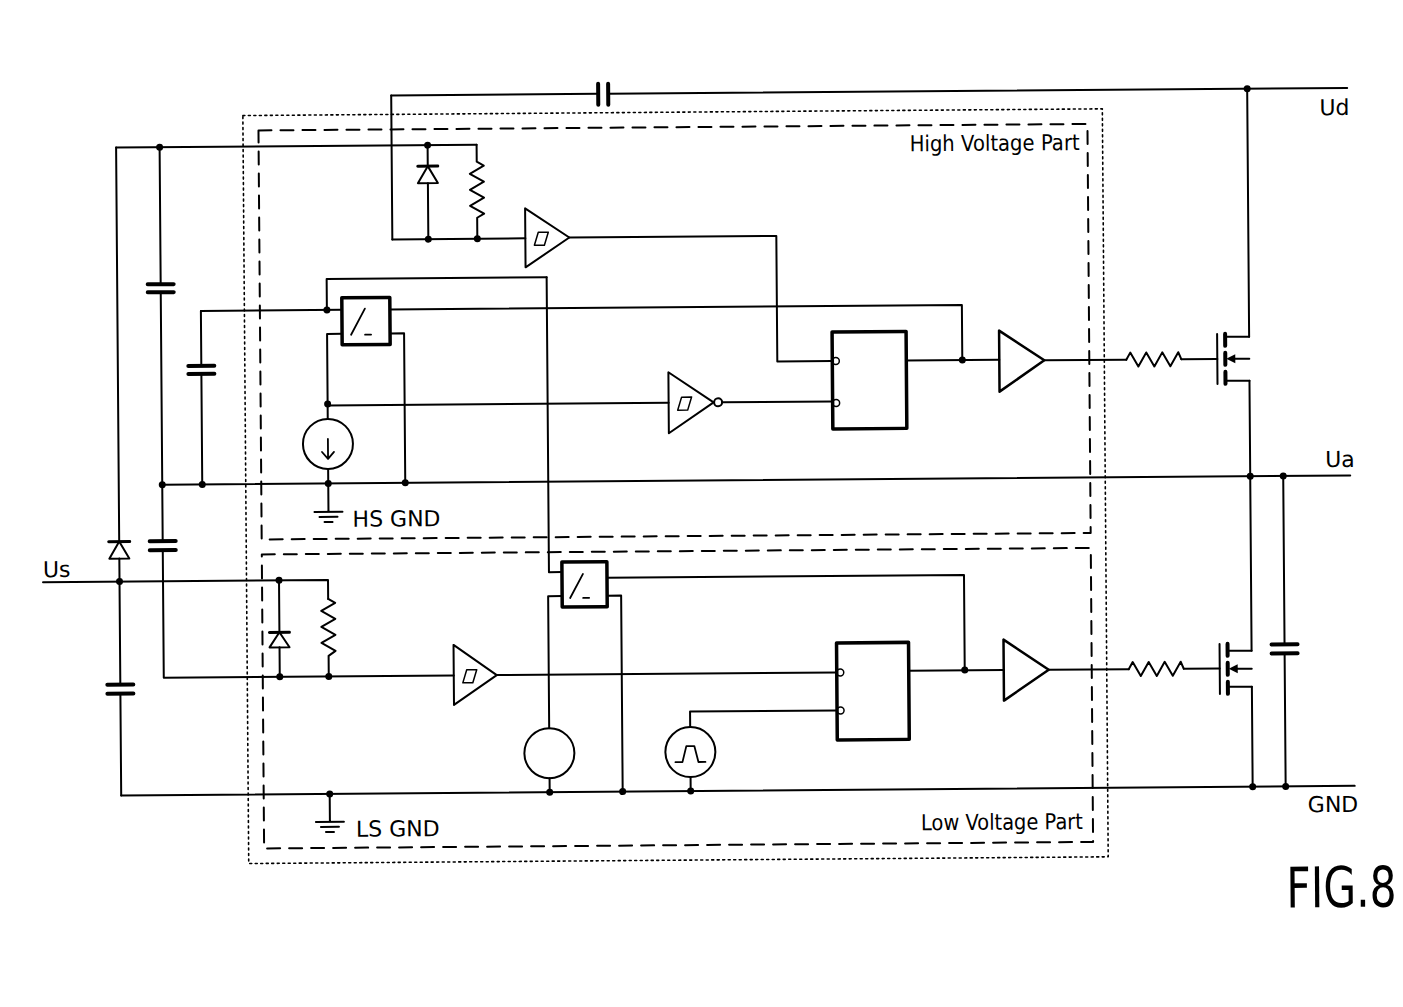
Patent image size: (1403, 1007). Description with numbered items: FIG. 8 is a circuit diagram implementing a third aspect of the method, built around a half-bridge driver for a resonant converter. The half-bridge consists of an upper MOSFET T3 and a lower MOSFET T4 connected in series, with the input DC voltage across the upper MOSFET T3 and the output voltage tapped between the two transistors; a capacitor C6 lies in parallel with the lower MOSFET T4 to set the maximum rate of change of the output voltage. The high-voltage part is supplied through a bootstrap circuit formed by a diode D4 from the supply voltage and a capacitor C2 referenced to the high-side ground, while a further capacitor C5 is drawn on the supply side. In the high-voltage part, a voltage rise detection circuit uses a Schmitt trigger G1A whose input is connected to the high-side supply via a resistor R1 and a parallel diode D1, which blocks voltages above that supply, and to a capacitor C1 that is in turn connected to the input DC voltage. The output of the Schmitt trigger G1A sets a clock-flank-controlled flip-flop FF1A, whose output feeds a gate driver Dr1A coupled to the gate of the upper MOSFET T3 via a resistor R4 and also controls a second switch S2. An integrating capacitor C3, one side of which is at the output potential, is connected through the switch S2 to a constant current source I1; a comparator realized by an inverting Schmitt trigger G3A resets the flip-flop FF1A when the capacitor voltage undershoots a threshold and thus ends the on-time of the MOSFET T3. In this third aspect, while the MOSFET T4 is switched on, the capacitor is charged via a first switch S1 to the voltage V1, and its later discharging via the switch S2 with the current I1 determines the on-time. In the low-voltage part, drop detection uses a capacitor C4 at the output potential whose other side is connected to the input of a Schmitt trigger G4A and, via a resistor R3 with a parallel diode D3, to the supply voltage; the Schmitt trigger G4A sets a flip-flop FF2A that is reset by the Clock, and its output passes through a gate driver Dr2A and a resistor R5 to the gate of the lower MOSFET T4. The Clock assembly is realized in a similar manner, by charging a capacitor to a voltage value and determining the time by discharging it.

The capacitor C1 is at (621, 80).
The capacitor C2 is at (173, 273).
The capacitor C3 is at (213, 354).
The capacitor C4 is at (174, 531).
The capacitor C5 is at (132, 673).
The capacitor C6 is at (1296, 631).
The diode D1 is at (443, 192).
The diode D3 is at (297, 628).
The diode D4 is at (133, 535).
The resistor R1 is at (493, 191).
The resistor R3 is at (347, 638).
The resistor R4 is at (1153, 344).
The resistor R5 is at (1155, 652).
The Schmitt trigger G1A is at (549, 226).
The Schmitt trigger G3A is at (692, 390).
The Schmitt trigger G4A is at (475, 661).
The clock-flank-controlled flip-flop FF1A is at (878, 368).
The flip-flop FF2A is at (881, 679).
The gate driver Dr1A is at (1024, 348).
The gate driver Dr2A is at (1025, 656).
The upper MOSFET T3 is at (1218, 353).
The lower MOSFET T4 is at (1221, 661).
The first switch S1 is at (756, 533).
The second switch S2 is at (582, 379).
The first constant current source I1 is at (342, 444).
The voltage V1 is at (564, 755).
The clock Clock is at (751, 750).